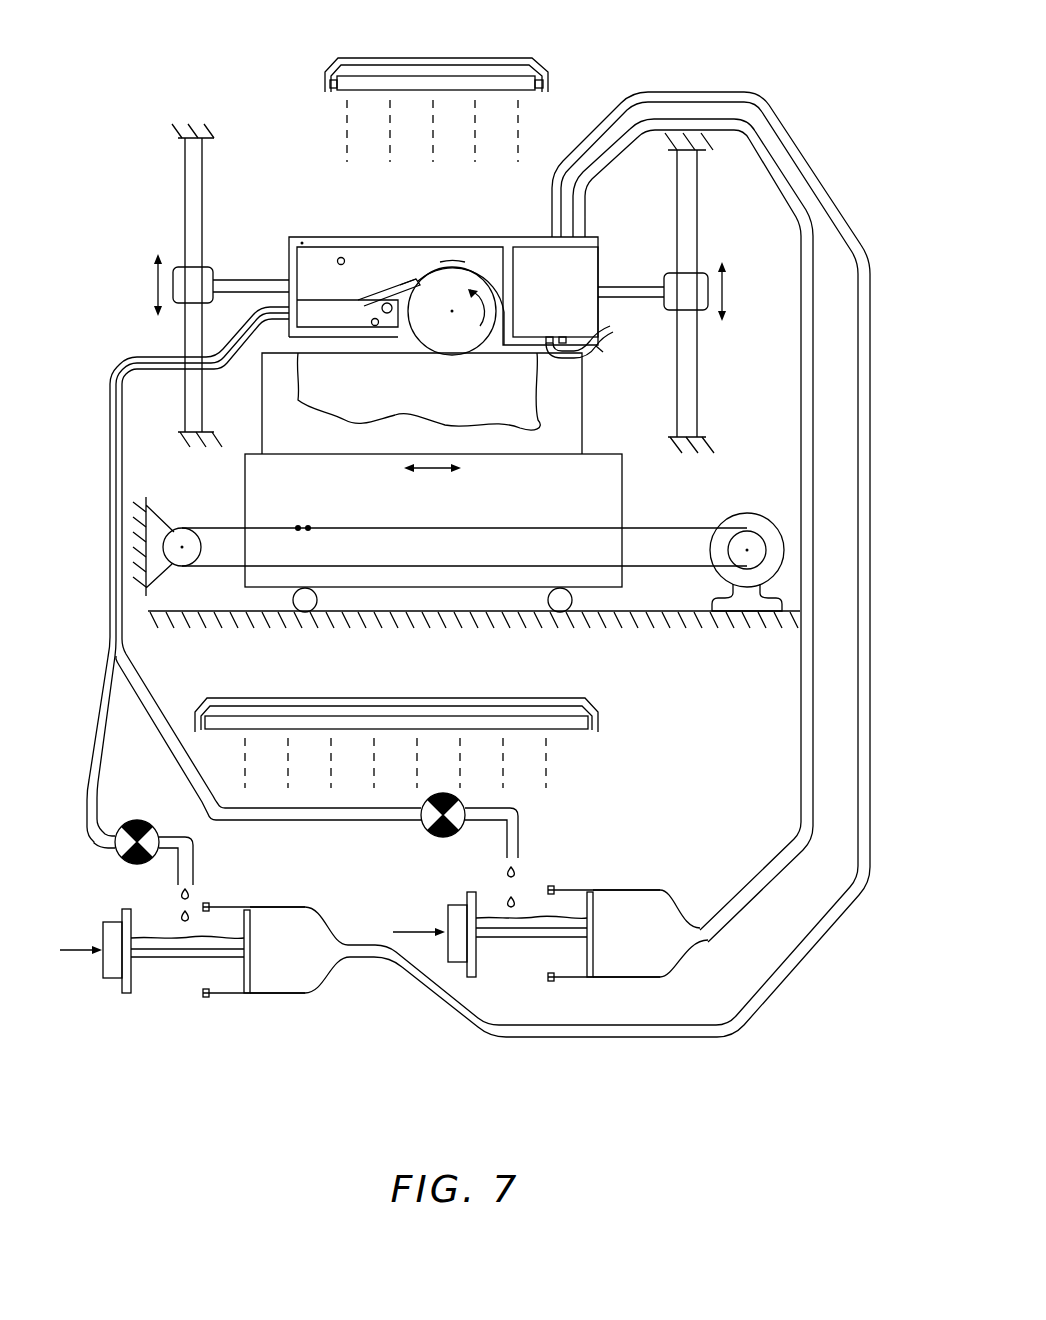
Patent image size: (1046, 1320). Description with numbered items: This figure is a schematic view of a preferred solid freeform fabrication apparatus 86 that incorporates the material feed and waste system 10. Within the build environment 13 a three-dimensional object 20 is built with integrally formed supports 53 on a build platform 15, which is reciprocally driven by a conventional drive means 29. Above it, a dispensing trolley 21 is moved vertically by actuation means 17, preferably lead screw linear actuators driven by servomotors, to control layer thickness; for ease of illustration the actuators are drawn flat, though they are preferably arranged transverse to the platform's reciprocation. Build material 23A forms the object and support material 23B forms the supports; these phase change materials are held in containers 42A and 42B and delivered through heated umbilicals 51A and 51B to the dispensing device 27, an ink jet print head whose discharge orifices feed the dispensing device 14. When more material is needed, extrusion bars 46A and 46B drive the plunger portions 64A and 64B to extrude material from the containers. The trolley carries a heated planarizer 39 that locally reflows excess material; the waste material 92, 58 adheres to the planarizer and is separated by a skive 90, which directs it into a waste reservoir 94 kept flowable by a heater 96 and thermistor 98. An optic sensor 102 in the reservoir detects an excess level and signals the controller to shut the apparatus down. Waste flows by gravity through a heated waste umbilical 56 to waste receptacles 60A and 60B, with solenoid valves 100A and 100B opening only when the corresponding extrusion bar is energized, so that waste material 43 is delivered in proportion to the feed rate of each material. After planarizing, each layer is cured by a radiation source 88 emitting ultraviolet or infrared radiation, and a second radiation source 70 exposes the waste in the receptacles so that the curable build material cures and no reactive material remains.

The material feed and waste system 10 is at (234, 1050).
The build environment 13 is at (602, 350).
The dispensing device 14 is at (588, 258).
The build platform 15 is at (508, 491).
The actuation means 17 is at (190, 247).
The three-dimensional object 20 is at (413, 389).
The dispensing trolley 21 is at (480, 237).
The build material 23A is at (648, 975).
The support material 23B is at (290, 985).
The dispensing device 27 is at (612, 331).
The drive means 29 is at (745, 522).
The heated planarizer 39 is at (463, 337).
The container 42A is at (640, 862).
The container 42B is at (257, 895).
The waste material 43 is at (172, 942).
The extrusion bar 46A is at (447, 918).
The extrusion bar 46B is at (110, 982).
The umbilical 51A is at (802, 720).
The umbilical 51B is at (806, 960).
The supports 53 is at (292, 445).
The waste umbilical 56 is at (110, 622).
The waste material 58 is at (370, 321).
The waste receptacle 60A is at (500, 905).
The waste receptacle 60B is at (148, 912).
The plunger portion 64A is at (478, 978).
The plunger portion 64B is at (135, 993).
The second radiation source 70 is at (540, 717).
The solid freeform fabrication apparatus 86 is at (331, 105).
The radiation source 88 is at (484, 78).
The skive 90 is at (404, 280).
The waste material 92 is at (452, 262).
The waste reservoir 94 is at (302, 243).
The heater 96 is at (386, 302).
The thermistor 98 is at (356, 301).
The solenoid valve 100A is at (462, 794).
The solenoid valve 100B is at (137, 820).
The optic sensor 102 is at (340, 258).